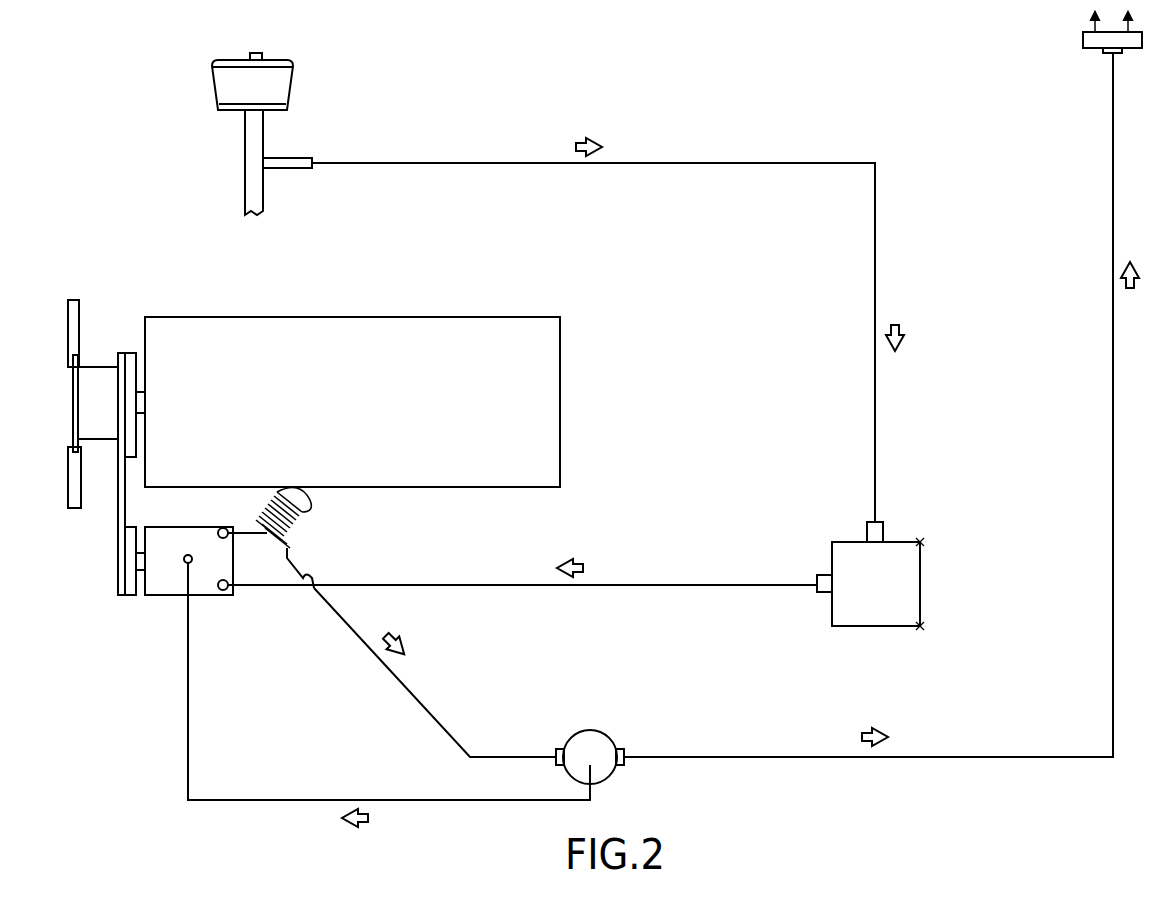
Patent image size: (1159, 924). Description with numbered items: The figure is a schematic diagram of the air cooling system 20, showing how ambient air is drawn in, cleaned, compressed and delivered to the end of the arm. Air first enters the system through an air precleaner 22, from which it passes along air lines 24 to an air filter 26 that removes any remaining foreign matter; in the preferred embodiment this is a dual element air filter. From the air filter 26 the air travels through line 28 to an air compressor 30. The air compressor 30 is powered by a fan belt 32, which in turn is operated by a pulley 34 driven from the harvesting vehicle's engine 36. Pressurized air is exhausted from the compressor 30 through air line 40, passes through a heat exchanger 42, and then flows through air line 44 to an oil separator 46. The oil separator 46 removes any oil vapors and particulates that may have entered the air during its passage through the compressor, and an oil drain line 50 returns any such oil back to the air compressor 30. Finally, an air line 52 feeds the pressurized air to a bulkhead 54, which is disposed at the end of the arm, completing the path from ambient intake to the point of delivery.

The air cooling system 20 is at (743, 426).
The air precleaner 22 is at (292, 92).
The air lines 24 is at (836, 163).
The air filter 26 is at (894, 602).
The line 28 is at (607, 586).
The air compressor 30 is at (207, 588).
The fan belt 32 is at (118, 513).
The pulley 34 is at (118, 362).
The engine 36 is at (394, 432).
The air line 40 is at (246, 533).
The heat exchanger 42 is at (314, 531).
The air line 44 is at (411, 692).
The oil separator 46 is at (598, 731).
The oil drain line 50 is at (443, 800).
The air line 52 is at (1022, 752).
The bulkhead 54 is at (1095, 42).